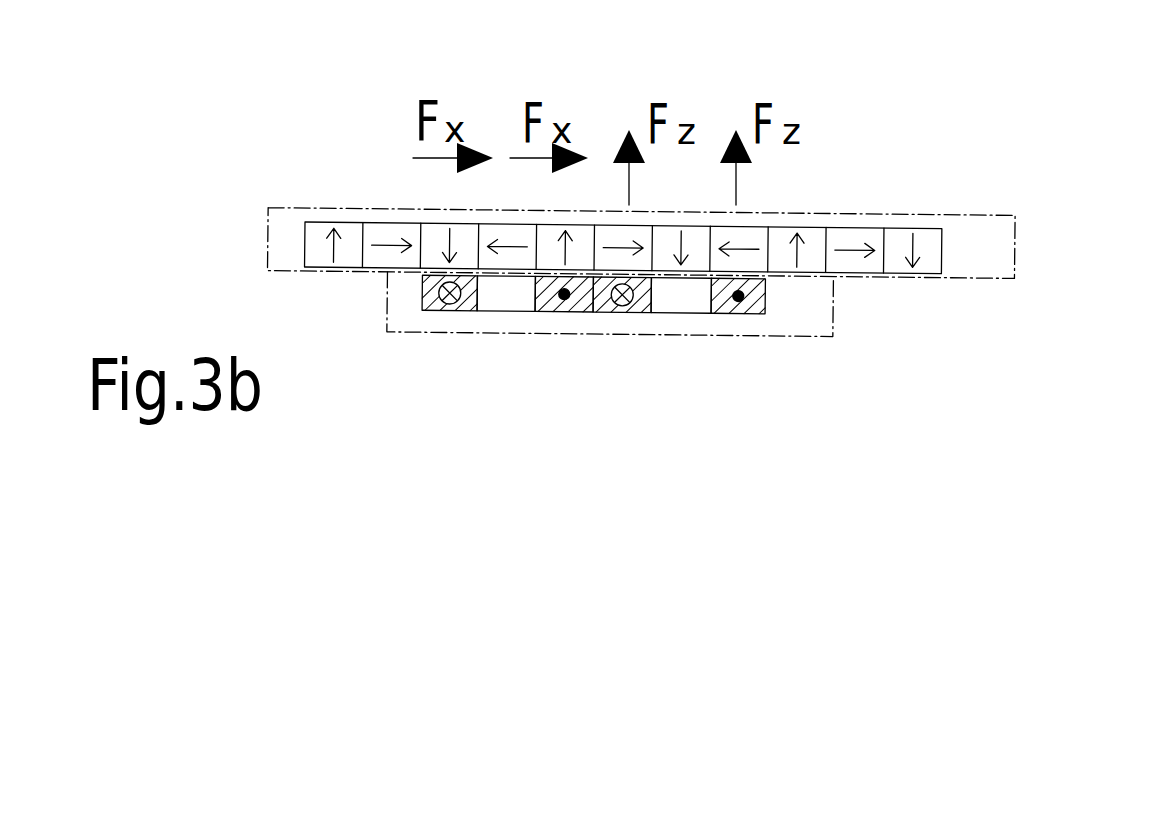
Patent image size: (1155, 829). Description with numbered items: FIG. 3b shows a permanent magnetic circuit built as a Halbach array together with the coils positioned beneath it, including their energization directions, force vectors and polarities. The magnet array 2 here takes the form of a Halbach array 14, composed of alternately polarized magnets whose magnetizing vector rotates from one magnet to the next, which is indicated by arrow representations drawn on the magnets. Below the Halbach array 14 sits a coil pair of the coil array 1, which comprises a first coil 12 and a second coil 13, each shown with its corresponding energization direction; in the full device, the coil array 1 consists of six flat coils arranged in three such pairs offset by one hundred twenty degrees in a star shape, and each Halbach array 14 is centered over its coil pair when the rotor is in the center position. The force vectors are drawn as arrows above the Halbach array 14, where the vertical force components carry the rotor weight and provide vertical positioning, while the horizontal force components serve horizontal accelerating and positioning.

The coil array 1 is at (834, 315).
The magnet array 2 is at (962, 216).
The first coil 12 is at (465, 313).
The second coil 13 is at (754, 313).
The Halbach array 14 is at (320, 221).